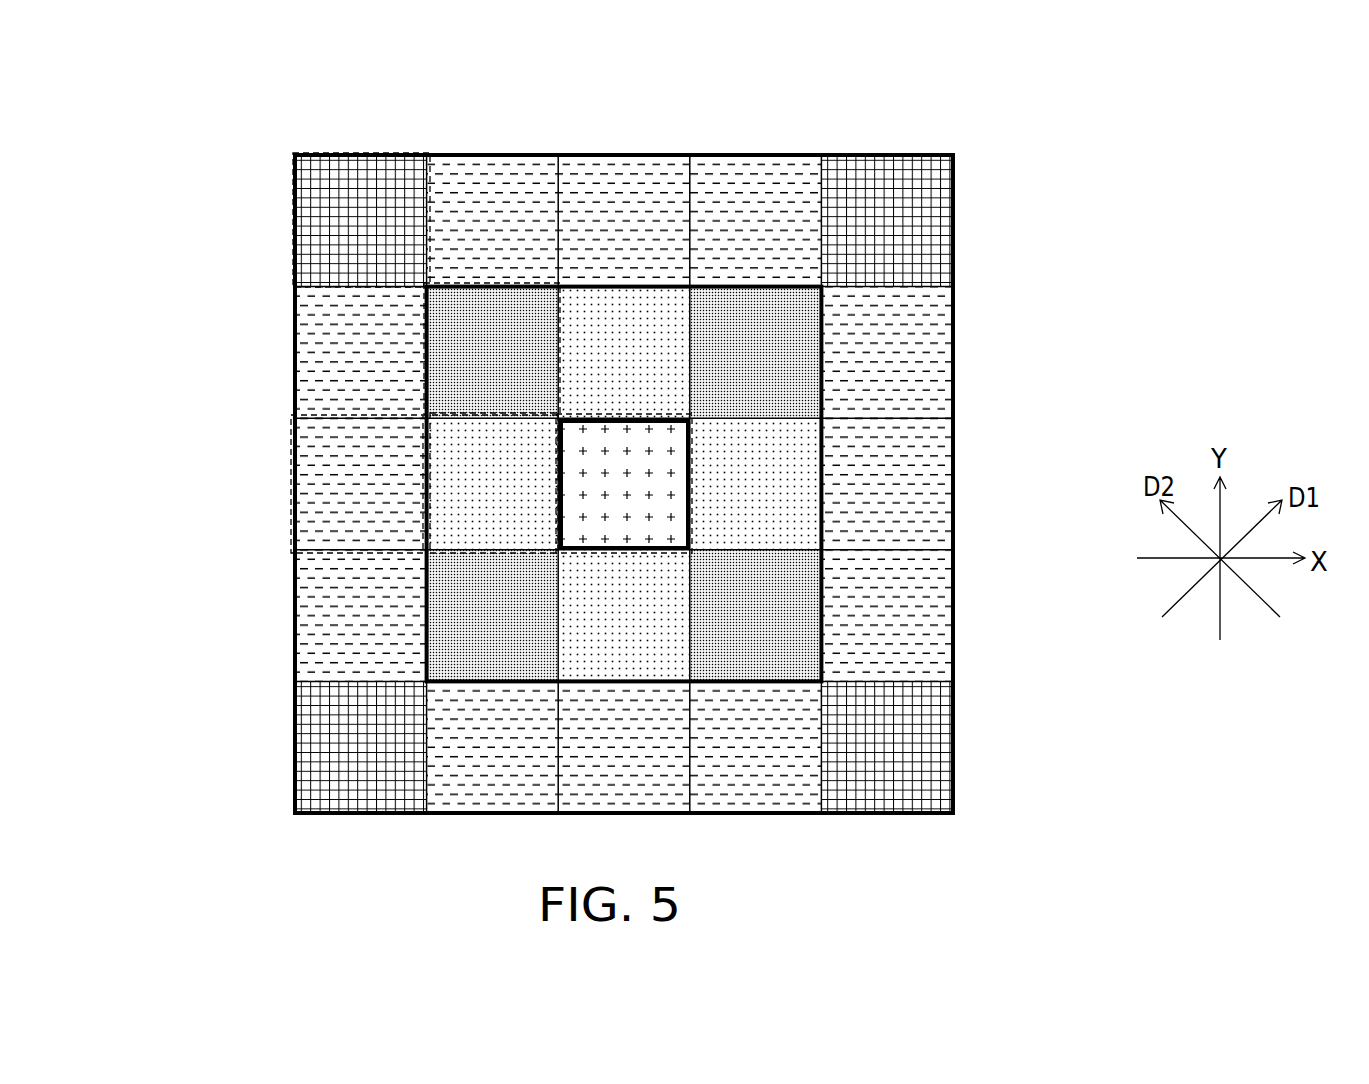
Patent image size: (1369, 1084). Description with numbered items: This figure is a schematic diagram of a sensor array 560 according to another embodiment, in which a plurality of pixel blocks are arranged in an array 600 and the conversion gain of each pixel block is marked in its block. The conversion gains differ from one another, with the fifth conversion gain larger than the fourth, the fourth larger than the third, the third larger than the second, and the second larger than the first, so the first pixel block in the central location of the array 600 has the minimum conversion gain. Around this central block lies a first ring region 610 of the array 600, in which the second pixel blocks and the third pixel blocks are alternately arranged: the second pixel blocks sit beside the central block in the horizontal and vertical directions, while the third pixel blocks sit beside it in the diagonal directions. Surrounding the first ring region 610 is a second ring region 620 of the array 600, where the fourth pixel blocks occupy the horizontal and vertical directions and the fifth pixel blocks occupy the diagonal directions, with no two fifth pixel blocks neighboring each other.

The array 600 is at (592, 455).
The sensor array 560 is at (592, 455).
The first ring region 610 is at (592, 379).
The second ring region 620 is at (592, 445).